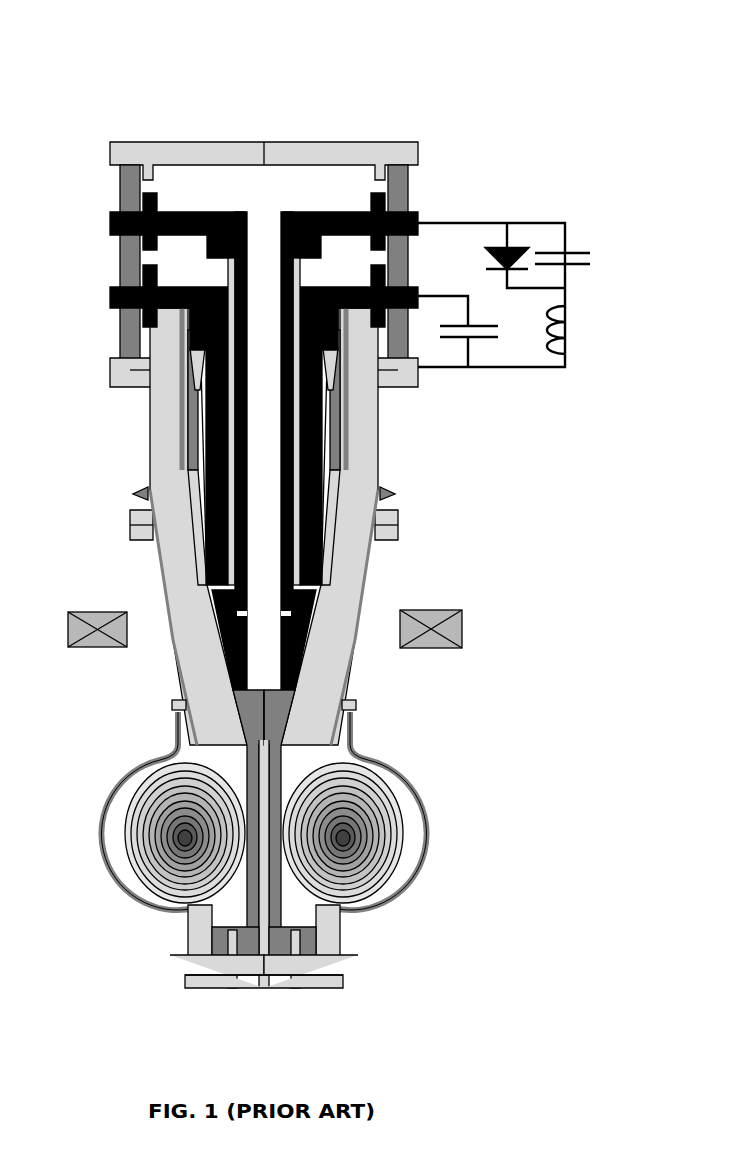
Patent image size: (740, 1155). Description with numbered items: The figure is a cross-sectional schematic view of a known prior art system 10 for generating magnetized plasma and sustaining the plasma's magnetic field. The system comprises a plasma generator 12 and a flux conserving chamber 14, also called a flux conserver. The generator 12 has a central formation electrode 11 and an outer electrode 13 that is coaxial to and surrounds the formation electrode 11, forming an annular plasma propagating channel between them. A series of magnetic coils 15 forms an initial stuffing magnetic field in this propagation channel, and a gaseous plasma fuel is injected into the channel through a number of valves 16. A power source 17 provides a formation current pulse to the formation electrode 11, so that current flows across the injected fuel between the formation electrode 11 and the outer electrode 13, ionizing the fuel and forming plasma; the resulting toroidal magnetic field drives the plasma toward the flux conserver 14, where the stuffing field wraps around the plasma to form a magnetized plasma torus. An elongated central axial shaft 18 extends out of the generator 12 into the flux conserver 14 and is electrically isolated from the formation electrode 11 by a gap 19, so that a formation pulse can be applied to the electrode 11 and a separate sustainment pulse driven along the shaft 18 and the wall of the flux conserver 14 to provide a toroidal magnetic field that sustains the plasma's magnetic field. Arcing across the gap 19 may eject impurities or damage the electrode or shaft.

The ion source assembly 10 is at (560, 61).
The central formation electrode 11 is at (347, 457).
The plasma generator 12 is at (122, 435).
The outer electrode 13 is at (147, 461).
The flux conserving chamber 14 is at (102, 825).
The magnetic coils 15 is at (330, 483).
The valves 16 is at (128, 500).
The power source 17 is at (570, 240).
The central axial shaft 18 is at (292, 680).
The gap 19 is at (203, 589).